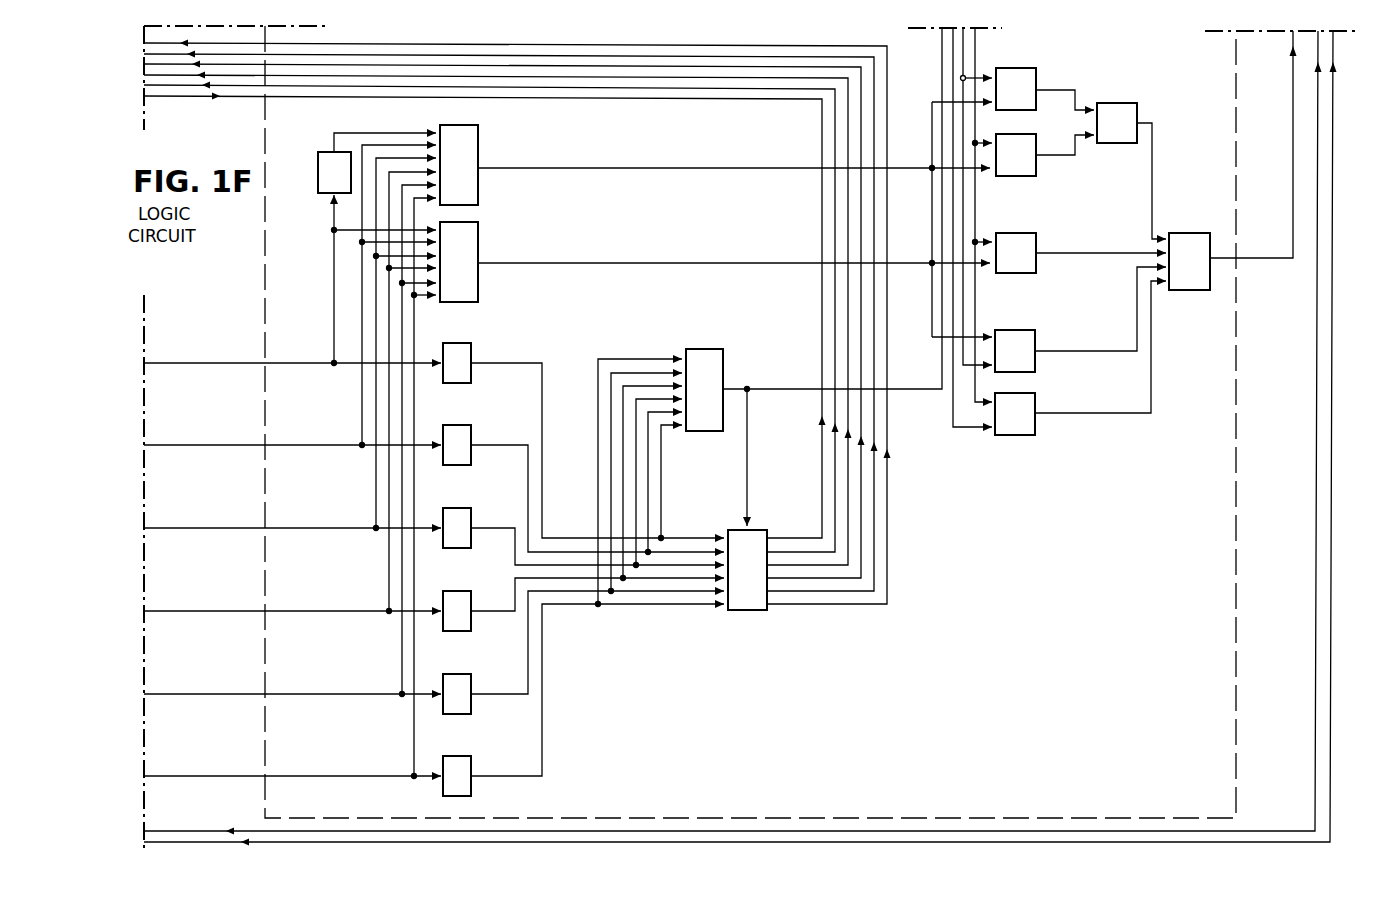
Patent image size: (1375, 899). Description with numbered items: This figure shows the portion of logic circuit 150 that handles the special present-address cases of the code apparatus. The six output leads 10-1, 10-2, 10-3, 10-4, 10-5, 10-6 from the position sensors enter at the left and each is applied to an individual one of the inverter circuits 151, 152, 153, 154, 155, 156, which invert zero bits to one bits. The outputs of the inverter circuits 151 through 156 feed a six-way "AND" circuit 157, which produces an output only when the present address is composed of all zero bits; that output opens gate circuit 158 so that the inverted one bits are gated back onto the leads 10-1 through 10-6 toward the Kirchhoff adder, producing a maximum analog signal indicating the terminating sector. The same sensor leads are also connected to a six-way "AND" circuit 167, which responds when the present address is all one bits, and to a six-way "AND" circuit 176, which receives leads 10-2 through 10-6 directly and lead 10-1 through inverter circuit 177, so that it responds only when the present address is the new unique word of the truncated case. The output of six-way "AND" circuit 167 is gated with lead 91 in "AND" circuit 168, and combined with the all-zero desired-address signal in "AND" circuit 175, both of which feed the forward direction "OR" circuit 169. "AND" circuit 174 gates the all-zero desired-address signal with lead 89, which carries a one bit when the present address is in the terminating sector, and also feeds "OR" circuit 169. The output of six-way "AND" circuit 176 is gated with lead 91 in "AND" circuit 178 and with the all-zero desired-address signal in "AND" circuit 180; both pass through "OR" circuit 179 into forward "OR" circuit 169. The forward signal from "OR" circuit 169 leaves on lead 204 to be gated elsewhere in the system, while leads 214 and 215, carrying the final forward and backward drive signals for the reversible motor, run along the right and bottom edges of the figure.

The output lead 10-1 is at (455, 45).
The output lead 10-2 is at (418, 57).
The output lead 10-3 is at (372, 67).
The output lead 10-4 is at (315, 77).
The output lead 10-5 is at (240, 88).
The output lead 10-6 is at (205, 98).
The lead 89 is at (953, 52).
The output lead 91 is at (965, 60).
The logic circuit 150 is at (265, 266).
The inverter circuit 151 is at (471, 346).
The inverter circuit 152 is at (471, 428).
The inverter circuit 153 is at (471, 511).
The inverter circuit 154 is at (471, 593).
The inverter circuit 155 is at (471, 676).
The inverter circuit 156 is at (471, 758).
The six-way AND circuit 157 is at (723, 358).
The gate circuit 158 is at (766, 531).
The six-way AND circuit 167 is at (478, 233).
The AND circuit 168 is at (1035, 336).
The forward direction OR circuit 169 is at (1196, 233).
The AND circuit 174 is at (1035, 400).
The AND circuit 175 is at (1036, 236).
The six-way AND circuit 176 is at (478, 137).
The inverter circuit 177 is at (319, 194).
The AND circuit 178 is at (1036, 72).
The OR circuit 179 is at (1137, 108).
The AND circuit 180 is at (1036, 173).
The lead 204 is at (1293, 244).
The lead 214 is at (1333, 68).
The lead 215 is at (1319, 95).